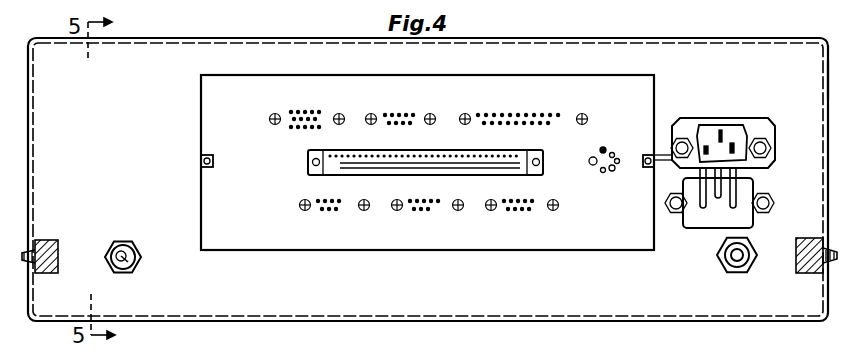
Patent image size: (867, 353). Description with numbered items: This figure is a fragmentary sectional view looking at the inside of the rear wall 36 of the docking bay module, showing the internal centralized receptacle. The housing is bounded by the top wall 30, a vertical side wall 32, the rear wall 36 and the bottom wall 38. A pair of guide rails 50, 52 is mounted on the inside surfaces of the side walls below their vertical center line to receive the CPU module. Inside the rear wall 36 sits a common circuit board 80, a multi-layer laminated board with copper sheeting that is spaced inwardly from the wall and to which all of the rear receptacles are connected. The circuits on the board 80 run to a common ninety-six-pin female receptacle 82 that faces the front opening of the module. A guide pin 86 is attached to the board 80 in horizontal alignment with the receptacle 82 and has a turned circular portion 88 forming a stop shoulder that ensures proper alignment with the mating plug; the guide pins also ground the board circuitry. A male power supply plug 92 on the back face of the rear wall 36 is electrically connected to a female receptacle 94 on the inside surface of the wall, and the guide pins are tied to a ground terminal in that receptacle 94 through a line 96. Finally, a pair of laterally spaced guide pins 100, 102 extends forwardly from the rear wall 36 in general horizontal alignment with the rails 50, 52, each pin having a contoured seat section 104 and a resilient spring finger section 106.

The top wall 30 is at (266, 38).
The vertical side wall 32 is at (824, 70).
The rear wall 36 is at (160, 77).
The bottom wall 38 is at (253, 320).
The guide rail 50 is at (806, 273).
The guide rail 52 is at (60, 232).
The circuit board 80 is at (240, 104).
The 96-pin female receptacle 82 is at (308, 159).
The guide pin 86 is at (647, 155).
The turned circular portion 88 is at (209, 155).
The male power supply plug 92 is at (756, 186).
The female receptacle 94 is at (742, 108).
The line 96 is at (674, 137).
The guide pin 100 is at (724, 262).
The guide pin 102 is at (133, 244).
The contoured seat section 104 is at (127, 258).
The resilient spring finger section 106 is at (122, 263).